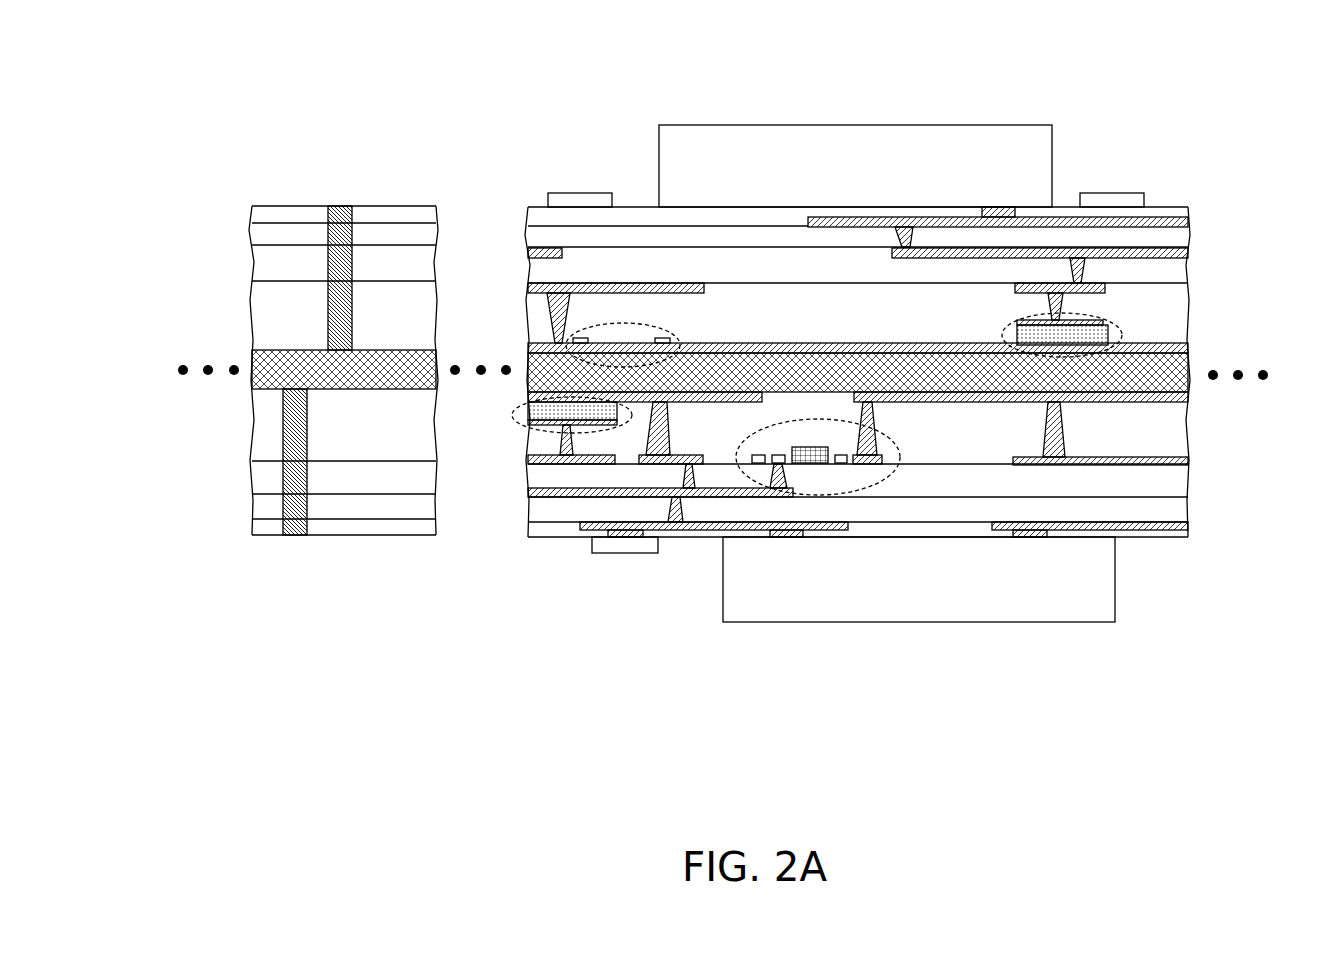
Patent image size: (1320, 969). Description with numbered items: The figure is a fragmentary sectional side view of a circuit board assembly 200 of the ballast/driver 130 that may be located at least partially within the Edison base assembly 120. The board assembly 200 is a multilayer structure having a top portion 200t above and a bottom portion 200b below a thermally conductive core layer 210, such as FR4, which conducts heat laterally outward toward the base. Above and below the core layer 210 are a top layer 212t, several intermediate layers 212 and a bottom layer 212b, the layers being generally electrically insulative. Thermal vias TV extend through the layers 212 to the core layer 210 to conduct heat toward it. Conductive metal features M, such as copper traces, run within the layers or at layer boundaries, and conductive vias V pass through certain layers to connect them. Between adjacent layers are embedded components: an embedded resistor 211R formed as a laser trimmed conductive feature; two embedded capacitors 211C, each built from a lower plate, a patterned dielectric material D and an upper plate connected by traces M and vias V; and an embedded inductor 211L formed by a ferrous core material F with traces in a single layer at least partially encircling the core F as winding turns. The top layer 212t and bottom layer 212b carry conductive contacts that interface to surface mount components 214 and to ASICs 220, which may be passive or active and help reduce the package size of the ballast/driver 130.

The Edison base assembly 120 is at (232, 72).
The ballast/driver 130 is at (362, 105).
The circuit board assembly 200 is at (292, 147).
The top portion of the board assembly 200t is at (612, 73).
The bottom portion of the board assembly 200b is at (753, 690).
The core layer 210 is at (252, 354).
The intermediate layers 212 is at (252, 235).
The top layer 212t is at (252, 213).
The bottom layer 212b is at (252, 527).
The surface mount components 214 is at (562, 193).
The ASIC 220 is at (659, 178).
The embedded resistor 211R is at (672, 330).
The embedded capacitor 211C is at (512, 410).
The embedded inductor 211L is at (900, 447).
The thermal via TV is at (352, 305).
The metal feature M is at (528, 251).
The via V is at (570, 308).
The dielectric material D is at (617, 410).
The ferrous core material F is at (796, 447).